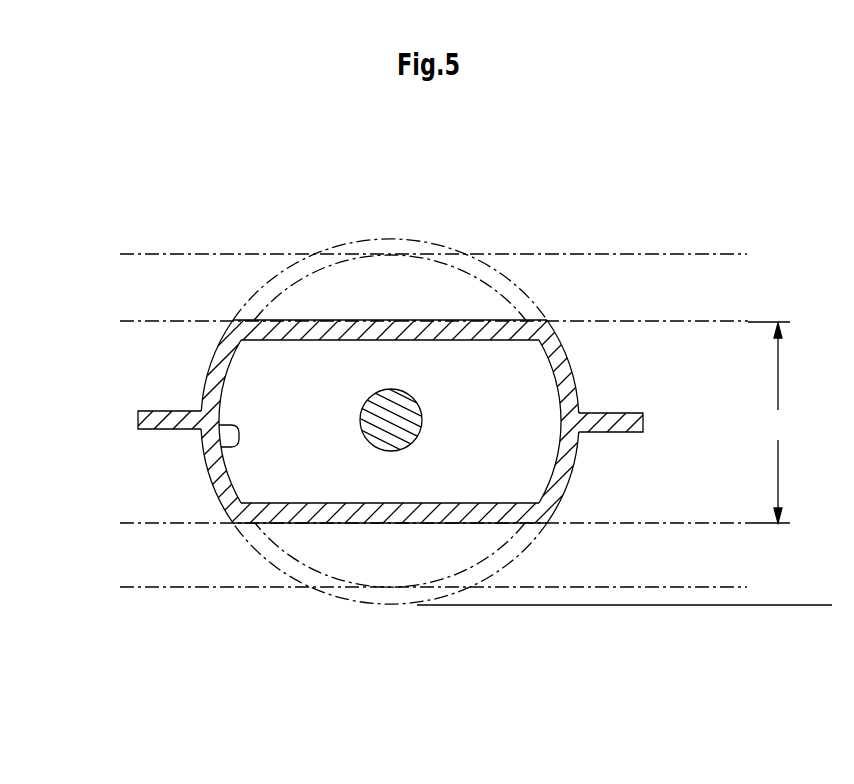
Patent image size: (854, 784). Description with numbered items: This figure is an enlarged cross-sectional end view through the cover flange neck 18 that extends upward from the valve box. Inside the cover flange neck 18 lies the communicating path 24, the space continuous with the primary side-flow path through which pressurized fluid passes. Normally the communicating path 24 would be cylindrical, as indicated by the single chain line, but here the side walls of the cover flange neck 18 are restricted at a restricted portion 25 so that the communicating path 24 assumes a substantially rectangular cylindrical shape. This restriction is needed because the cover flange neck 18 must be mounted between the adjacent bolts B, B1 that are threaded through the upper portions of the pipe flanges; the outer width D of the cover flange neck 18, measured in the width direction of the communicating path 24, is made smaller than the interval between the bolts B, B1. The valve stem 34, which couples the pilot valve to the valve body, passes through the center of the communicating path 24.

The cover flange neck 18 is at (213, 372).
The communicating path 24 is at (222, 445).
The restricted portion 25 is at (394, 320).
The valve stem 34 is at (365, 430).
The bolt B1 is at (225, 262).
The bolt B is at (233, 573).
The outer width D is at (769, 422).